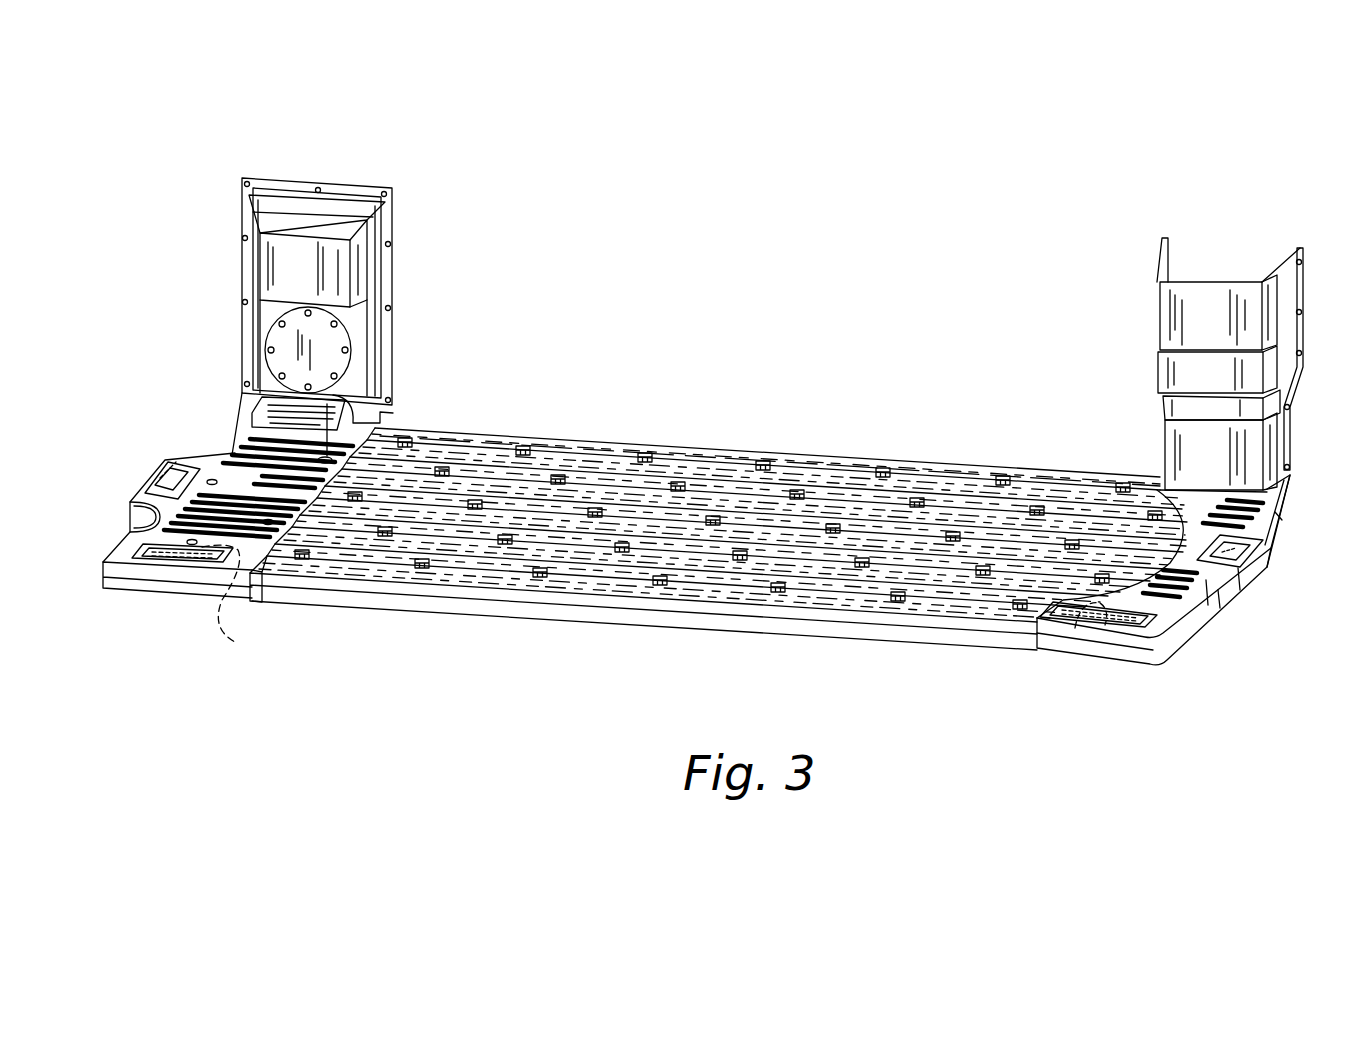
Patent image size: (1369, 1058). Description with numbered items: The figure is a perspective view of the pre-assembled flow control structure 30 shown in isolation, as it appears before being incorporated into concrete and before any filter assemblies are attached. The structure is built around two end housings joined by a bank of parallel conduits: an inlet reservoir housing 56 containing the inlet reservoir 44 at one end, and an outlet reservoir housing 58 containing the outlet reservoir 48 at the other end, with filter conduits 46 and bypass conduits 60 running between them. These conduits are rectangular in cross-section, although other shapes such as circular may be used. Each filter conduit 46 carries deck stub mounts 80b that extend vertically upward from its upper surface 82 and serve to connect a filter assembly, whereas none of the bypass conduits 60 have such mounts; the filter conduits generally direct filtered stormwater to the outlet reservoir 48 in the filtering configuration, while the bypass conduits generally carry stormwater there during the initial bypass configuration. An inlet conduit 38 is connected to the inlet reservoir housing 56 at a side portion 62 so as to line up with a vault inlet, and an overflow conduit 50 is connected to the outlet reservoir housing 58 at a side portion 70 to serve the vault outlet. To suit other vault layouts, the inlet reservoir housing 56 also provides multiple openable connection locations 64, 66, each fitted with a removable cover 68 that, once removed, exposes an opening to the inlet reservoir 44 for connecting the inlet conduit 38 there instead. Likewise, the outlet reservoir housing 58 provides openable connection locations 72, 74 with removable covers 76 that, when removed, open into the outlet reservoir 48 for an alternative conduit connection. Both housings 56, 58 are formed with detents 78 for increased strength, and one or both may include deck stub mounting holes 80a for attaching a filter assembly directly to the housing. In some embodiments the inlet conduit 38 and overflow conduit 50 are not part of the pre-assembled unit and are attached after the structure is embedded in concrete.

The pre-assembled flow control structure 30 is at (838, 248).
The inlet conduit 38 is at (1287, 350).
The inlet reservoir 44 is at (1115, 640).
The filter conduits 46 is at (947, 510).
The outlet reservoir 48 is at (168, 580).
The overflow conduit 50 is at (378, 289).
The inlet reservoir housing 56 is at (1253, 565).
The outlet reservoir housing 58 is at (207, 457).
The bypass conduits 60 is at (813, 457).
The side portion 62 is at (1310, 452).
The openable connection location 64 is at (1283, 518).
The openable connection location 66 is at (1075, 628).
The removable cover 68 is at (1270, 545).
The side portion 70 is at (228, 378).
The openable connection location 72 is at (162, 463).
The openable connection location 74 is at (236, 600).
The removable covers 76 is at (158, 487).
The detents 78 is at (252, 442).
The deck stub mounting holes 80a is at (327, 400).
The deck stub mounts 80b is at (647, 455).
The upper surface 82 is at (547, 450).